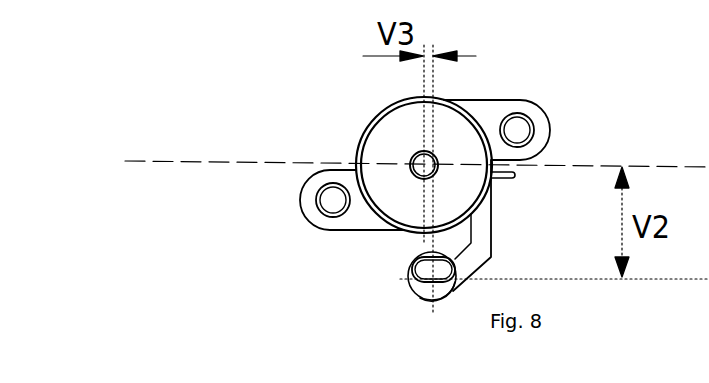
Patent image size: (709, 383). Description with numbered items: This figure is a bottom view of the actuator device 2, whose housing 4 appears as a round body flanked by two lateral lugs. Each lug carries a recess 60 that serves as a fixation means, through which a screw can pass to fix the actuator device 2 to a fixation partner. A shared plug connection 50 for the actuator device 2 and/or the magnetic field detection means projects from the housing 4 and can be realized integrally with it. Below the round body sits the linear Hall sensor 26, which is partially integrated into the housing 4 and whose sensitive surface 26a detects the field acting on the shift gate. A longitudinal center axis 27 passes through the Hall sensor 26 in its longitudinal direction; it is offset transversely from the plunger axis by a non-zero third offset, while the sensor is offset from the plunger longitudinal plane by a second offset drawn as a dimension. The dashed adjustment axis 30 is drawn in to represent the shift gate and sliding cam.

The actuator device 2 is at (480, 200).
The housing 4 is at (530, 381).
The Hall sensor 26 is at (427, 300).
The sensitive surface 26a is at (430, 268).
The longitudinal center axis 27 is at (430, 276).
The adjustment axis 30 is at (133, 162).
The plug connection 50 is at (515, 176).
The recesses 60 is at (532, 120).